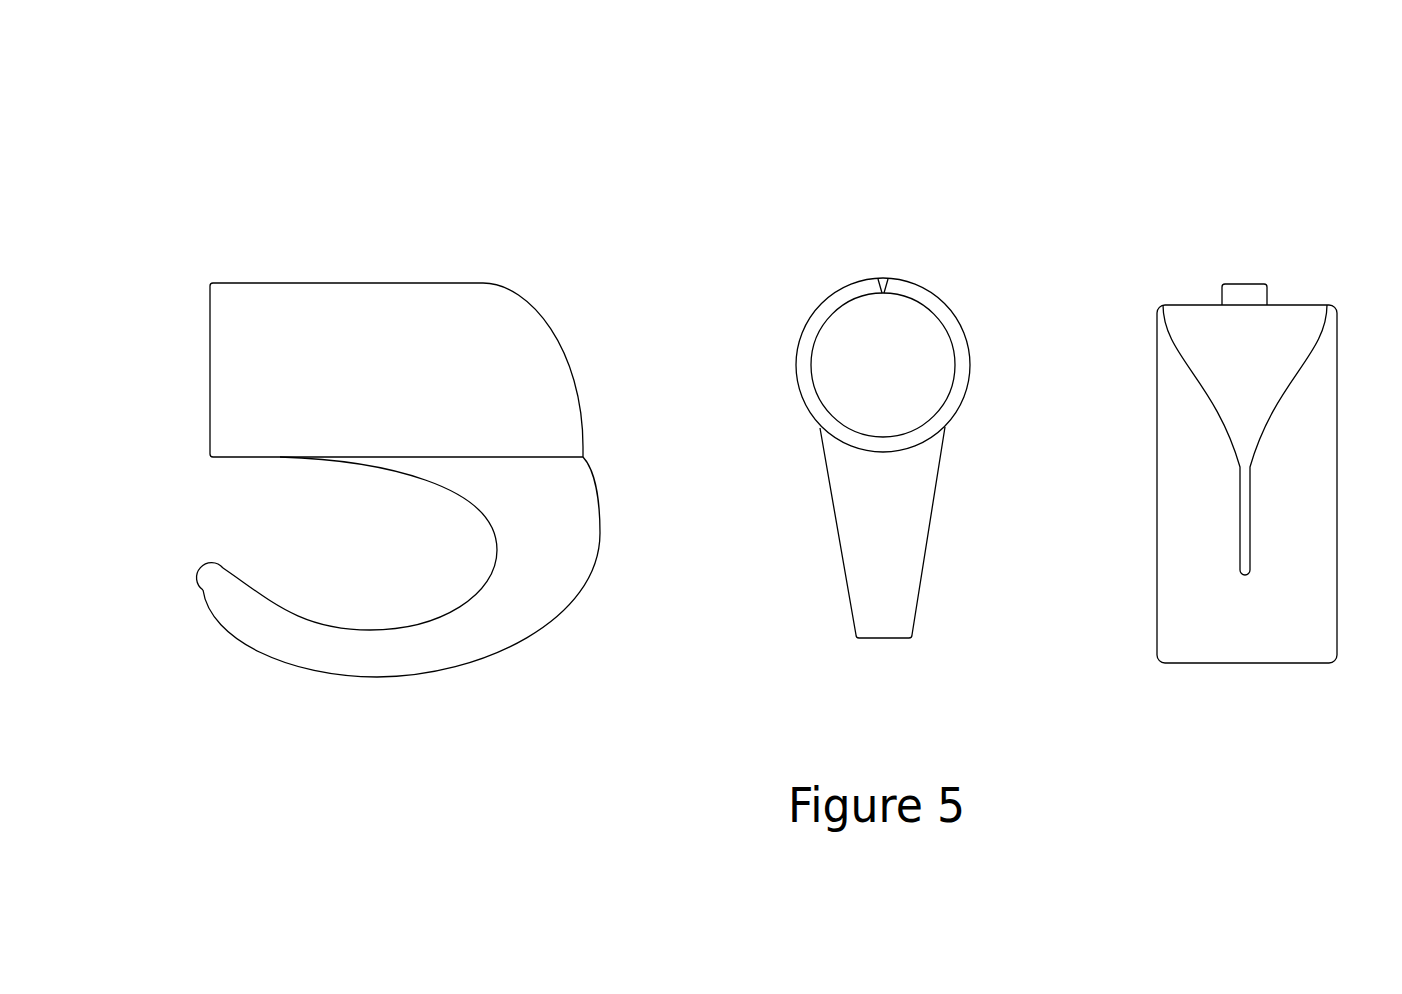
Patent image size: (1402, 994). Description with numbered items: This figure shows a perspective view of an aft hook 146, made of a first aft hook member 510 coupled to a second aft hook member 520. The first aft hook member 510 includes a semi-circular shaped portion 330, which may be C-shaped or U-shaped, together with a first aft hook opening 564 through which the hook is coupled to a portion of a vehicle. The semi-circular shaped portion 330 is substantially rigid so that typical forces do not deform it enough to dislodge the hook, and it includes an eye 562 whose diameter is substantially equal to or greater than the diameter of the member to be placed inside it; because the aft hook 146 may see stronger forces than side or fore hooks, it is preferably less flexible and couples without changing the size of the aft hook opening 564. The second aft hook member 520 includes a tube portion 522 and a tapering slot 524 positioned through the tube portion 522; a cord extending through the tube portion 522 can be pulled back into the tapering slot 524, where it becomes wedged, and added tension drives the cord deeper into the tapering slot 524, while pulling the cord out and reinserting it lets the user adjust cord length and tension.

The aft hook 146 is at (757, 413).
The first aft hook member 510 is at (756, 469).
The second aft hook member 520 is at (756, 469).
The tube portion 522 is at (802, 429).
The tapering slot 524 is at (1102, 378).
The semi-circular shaped portion 330 is at (435, 567).
The eye 562 is at (360, 620).
The first aft hook opening 564 is at (170, 573).